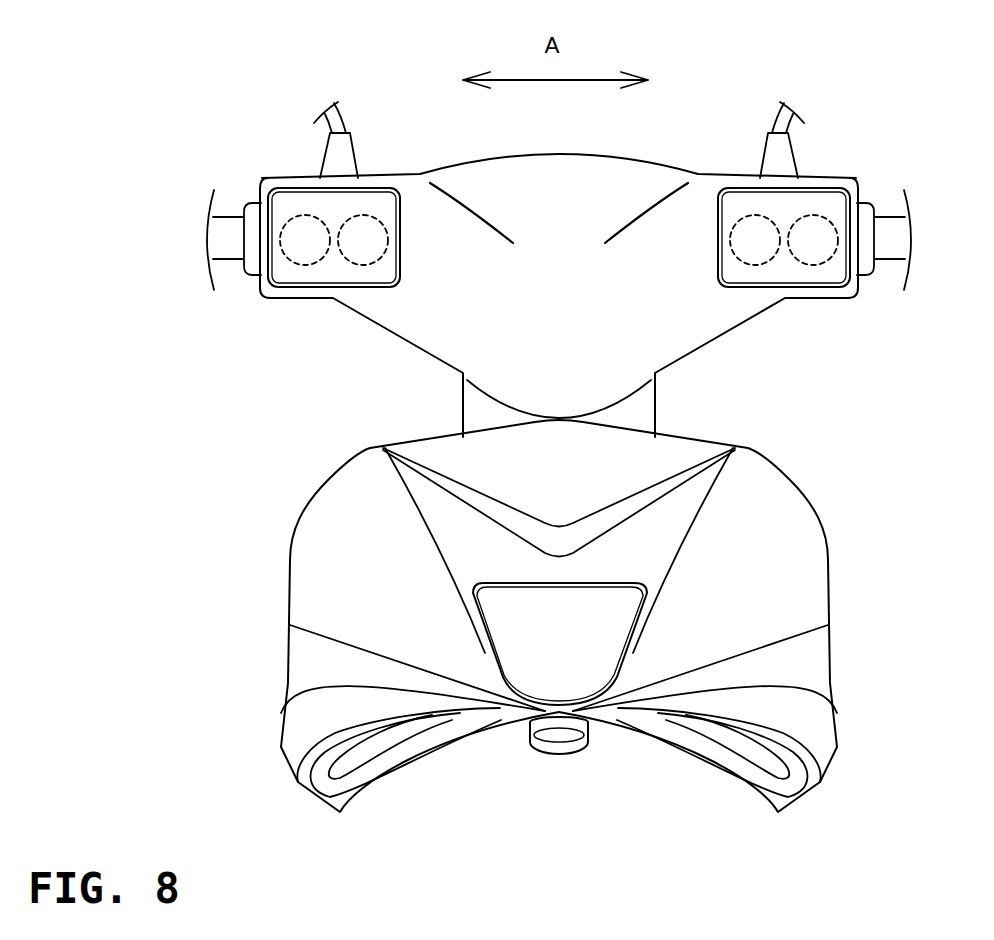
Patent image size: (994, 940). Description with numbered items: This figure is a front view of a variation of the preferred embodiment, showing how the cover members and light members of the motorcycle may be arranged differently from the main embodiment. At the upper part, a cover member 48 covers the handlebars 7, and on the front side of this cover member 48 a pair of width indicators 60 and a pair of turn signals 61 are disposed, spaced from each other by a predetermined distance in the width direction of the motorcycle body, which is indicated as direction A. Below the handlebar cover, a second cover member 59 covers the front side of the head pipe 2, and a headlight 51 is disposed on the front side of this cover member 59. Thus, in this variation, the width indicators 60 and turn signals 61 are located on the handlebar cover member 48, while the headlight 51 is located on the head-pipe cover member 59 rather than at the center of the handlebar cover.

The head pipe 2 is at (567, 740).
The handlebars 7 is at (884, 233).
The cover member 48 is at (668, 320).
The headlight 51 is at (618, 673).
The cover member 59 is at (797, 515).
The width indicators 60 is at (367, 263).
The turn signals 61 is at (300, 267).